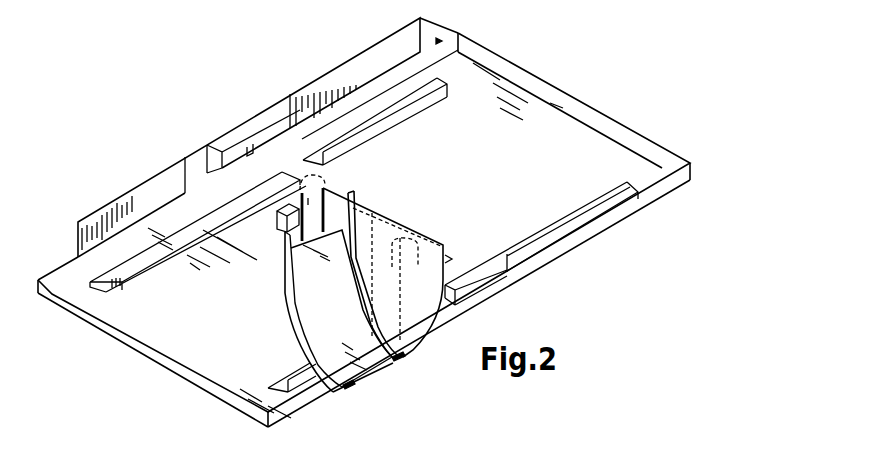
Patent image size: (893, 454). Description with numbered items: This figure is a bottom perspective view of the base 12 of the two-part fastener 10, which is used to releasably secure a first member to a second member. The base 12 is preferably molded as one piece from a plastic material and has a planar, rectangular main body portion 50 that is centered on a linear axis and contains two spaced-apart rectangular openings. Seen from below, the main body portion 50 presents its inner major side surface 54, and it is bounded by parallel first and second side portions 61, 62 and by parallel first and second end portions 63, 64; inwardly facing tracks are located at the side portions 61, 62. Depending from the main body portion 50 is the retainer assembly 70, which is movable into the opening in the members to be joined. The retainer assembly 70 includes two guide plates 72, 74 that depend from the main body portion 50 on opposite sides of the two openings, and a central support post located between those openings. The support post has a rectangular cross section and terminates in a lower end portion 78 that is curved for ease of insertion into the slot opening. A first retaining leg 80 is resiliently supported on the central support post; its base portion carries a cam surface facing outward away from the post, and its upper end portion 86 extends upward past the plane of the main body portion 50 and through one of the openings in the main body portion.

The two-part fastener 10 is at (103, 375).
The base 12 is at (160, 363).
The main body portion 50 is at (540, 146).
The inner major side surface 54 is at (594, 147).
The first side portion 61 is at (562, 260).
The second side portion 62 is at (189, 196).
The first end portion 63 is at (528, 82).
The second end portion 64 is at (83, 322).
The retainer assembly 70 is at (339, 296).
The guide plate 72 is at (384, 232).
The guide plate 74 is at (309, 291).
The lower end portion 78 is at (378, 377).
The first retaining leg 80 is at (318, 298).
The upper end portion 86 is at (343, 190).